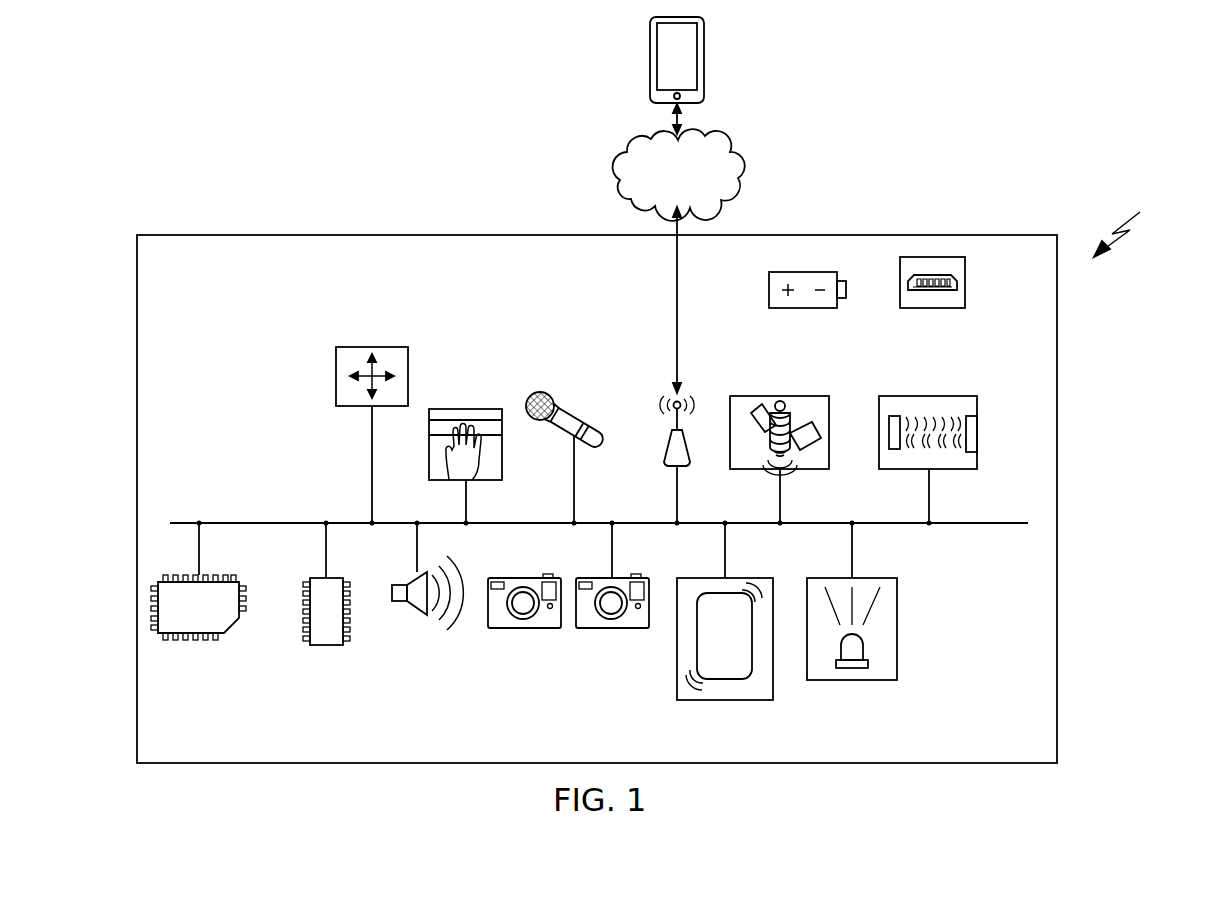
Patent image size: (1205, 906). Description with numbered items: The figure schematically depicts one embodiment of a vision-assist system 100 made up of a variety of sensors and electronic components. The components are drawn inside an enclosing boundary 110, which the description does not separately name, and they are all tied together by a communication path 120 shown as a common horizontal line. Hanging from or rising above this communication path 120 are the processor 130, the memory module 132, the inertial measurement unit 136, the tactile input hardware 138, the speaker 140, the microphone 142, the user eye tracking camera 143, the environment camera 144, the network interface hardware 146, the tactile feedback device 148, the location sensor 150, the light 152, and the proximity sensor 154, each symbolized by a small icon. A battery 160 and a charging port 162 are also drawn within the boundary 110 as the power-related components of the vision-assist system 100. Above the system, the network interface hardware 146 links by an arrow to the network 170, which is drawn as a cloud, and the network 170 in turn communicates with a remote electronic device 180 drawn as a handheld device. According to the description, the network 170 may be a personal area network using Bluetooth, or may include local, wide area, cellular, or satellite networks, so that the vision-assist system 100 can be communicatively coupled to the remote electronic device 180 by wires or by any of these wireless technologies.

The vision-assist system 100 is at (1137, 224).
The housing 110 is at (1057, 395).
The communication path 120 is at (183, 523).
The processor 130 is at (238, 632).
The memory module 132 is at (326, 645).
The inertial measurement unit 136 is at (372, 347).
The tactile input hardware 138 is at (466, 409).
The speaker 140 is at (417, 615).
The microphone 142 is at (578, 412).
The user eye tracking camera 143 is at (523, 628).
The environment camera 144 is at (612, 628).
The network interface hardware 146 is at (672, 440).
The tactile feedback device 148 is at (725, 700).
The location sensor 150 is at (780, 396).
The light 152 is at (852, 680).
The proximity sensor 154 is at (929, 396).
The battery 160 is at (769, 290).
The charging port 162 is at (965, 288).
The network 170 is at (618, 173).
The remote electronic device 180 is at (650, 45).